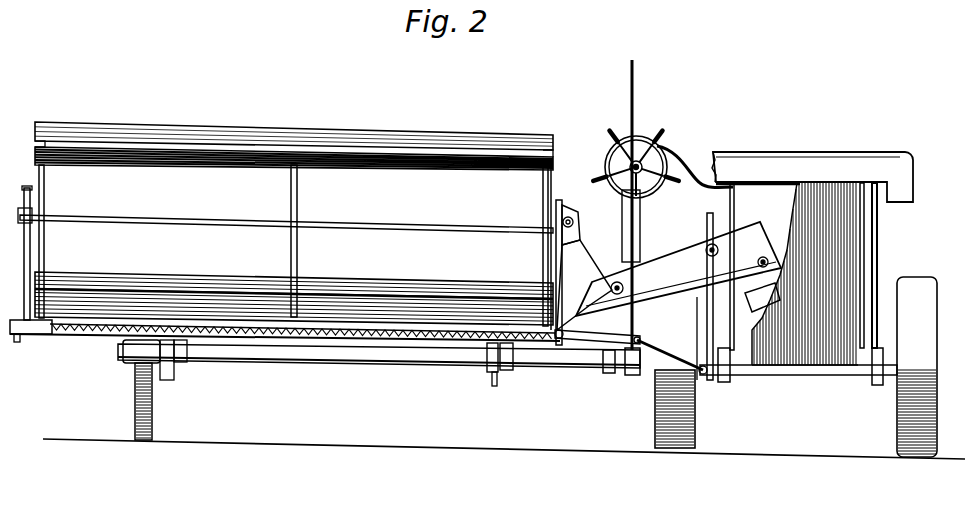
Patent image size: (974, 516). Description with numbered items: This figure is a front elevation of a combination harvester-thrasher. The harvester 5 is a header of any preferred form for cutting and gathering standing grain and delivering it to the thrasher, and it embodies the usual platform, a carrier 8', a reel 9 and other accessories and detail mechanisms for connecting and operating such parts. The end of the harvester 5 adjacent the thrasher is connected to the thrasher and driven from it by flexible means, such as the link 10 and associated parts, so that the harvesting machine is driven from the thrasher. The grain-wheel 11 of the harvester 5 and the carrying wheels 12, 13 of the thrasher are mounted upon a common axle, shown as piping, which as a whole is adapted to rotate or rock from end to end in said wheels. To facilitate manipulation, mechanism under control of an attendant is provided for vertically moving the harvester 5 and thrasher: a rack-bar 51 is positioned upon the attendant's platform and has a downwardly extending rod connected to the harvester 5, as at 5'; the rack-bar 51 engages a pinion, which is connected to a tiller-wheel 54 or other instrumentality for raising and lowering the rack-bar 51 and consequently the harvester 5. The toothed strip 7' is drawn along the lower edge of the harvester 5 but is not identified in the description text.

The harvester 5 is at (31, 273).
The connection point of rod to harvester 5' is at (613, 379).
The toothed conveyor strip 7' is at (302, 357).
The carrier 8' is at (678, 269).
The reel 9 is at (153, 283).
The link 10 is at (676, 357).
The grain-wheel 11 is at (135, 400).
The carrying wheel 12 is at (655, 424).
The carrying wheel 13 is at (897, 418).
The rack-bar 51 is at (634, 89).
The tiller-wheel 54 is at (665, 146).